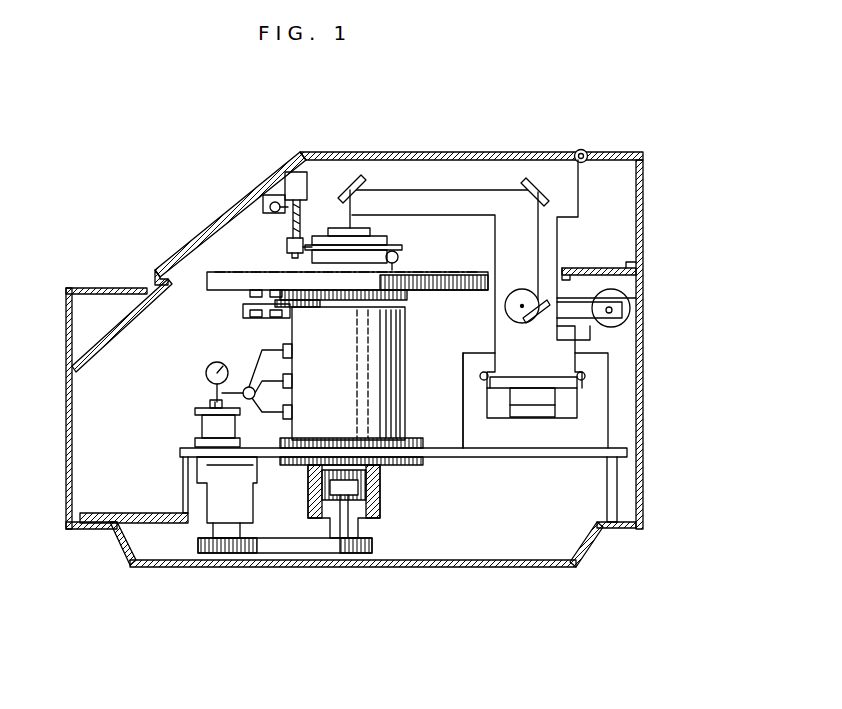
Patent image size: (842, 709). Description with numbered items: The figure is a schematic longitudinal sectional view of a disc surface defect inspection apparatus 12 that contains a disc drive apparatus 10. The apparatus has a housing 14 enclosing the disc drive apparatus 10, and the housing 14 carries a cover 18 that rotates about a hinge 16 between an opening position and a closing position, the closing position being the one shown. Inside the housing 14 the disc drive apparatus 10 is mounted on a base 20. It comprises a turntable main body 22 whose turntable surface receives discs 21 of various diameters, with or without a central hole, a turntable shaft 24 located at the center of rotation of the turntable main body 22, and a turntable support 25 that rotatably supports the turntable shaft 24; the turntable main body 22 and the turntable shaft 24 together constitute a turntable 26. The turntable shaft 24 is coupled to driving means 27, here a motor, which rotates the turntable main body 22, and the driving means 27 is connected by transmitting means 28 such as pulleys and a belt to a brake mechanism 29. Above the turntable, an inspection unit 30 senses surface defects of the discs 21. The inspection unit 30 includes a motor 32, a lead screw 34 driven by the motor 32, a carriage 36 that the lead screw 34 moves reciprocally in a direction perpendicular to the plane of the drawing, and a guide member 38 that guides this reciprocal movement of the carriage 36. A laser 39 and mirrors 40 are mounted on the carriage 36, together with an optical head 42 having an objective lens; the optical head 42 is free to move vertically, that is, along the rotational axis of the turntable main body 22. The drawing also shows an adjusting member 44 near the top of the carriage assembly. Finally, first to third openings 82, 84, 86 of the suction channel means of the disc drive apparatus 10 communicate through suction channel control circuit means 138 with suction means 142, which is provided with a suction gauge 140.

The disc drive apparatus 10 is at (412, 356).
The disc surface defect inspection apparatus 12 is at (642, 203).
The housing 14 is at (66, 436).
The hinge 16 is at (583, 148).
The cover 18 is at (220, 222).
The base 20 is at (452, 460).
The discs 21 is at (266, 270).
The turntable main body 22 is at (213, 297).
The turntable shaft 24 is at (385, 306).
The turntable support 25 is at (395, 392).
The turntable 26 is at (243, 303).
The driving means 27 is at (380, 495).
The transmitting means 28 is at (295, 555).
The brake mechanism 29 is at (240, 510).
The inspection unit 30 is at (563, 238).
The motor 32 is at (628, 302).
The lead screw 34 is at (630, 318).
The carriage 36 is at (580, 192).
The guide member 38 is at (603, 398).
The laser 39 is at (519, 290).
The mirrors 40 is at (349, 172).
The optical head 42 is at (384, 240).
The adjusting screw 44 is at (292, 180).
The first opening 82 is at (292, 352).
The second opening 84 is at (292, 381).
The third opening 86 is at (292, 412).
The suction channel control circuit means 138 is at (247, 387).
The suction gauge 140 is at (206, 372).
The suction means 142 is at (200, 424).